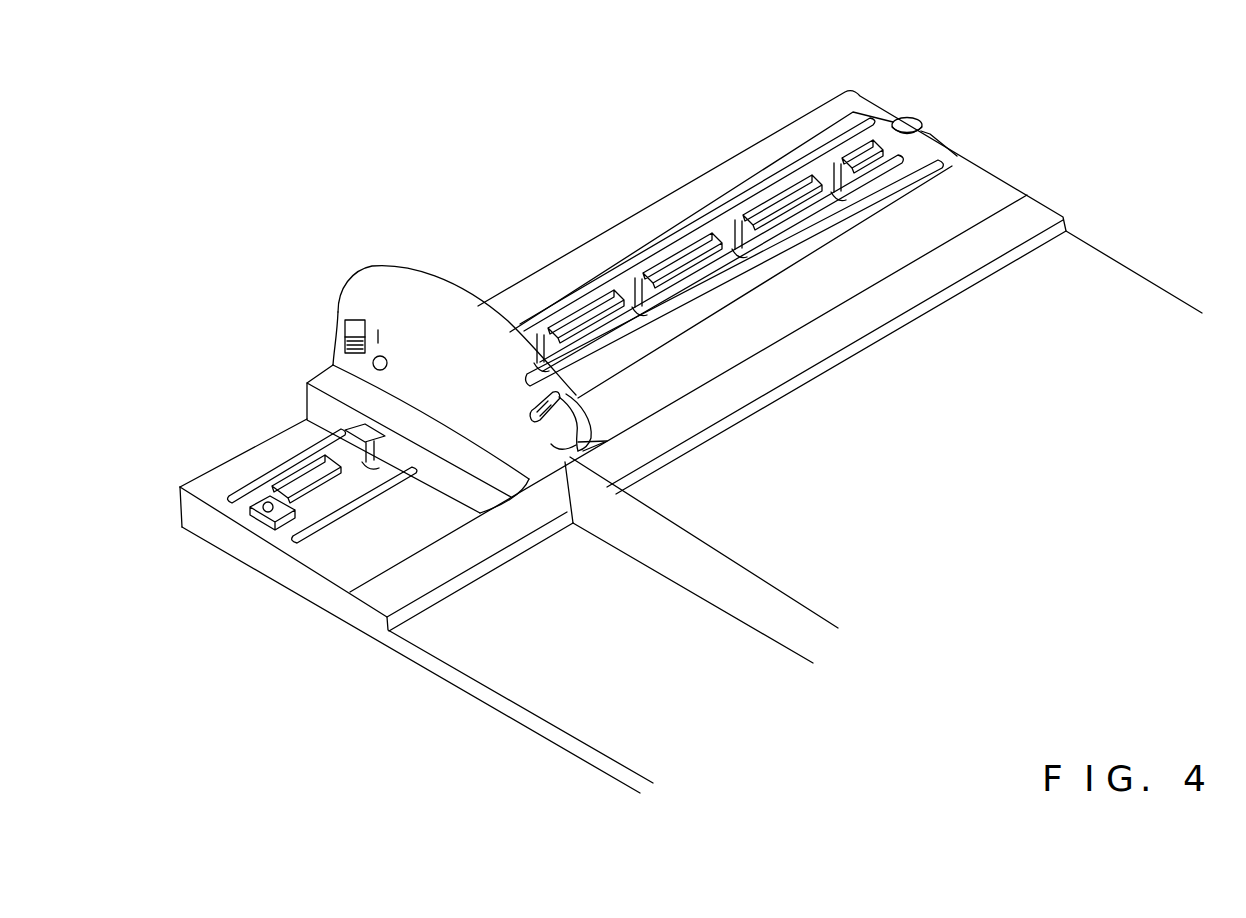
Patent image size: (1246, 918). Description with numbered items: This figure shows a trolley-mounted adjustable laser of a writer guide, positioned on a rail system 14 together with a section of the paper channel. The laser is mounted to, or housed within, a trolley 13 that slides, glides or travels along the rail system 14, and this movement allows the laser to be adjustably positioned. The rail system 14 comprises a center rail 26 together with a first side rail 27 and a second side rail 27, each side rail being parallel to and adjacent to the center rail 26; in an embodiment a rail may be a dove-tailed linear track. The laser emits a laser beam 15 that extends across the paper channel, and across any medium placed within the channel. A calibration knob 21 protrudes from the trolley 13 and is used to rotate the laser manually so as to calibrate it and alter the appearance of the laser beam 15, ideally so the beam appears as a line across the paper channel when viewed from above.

The trolley 13 is at (394, 312).
The rail system 14 is at (887, 117).
The laser beam 15 is at (722, 578).
The calibration knob 21 is at (567, 394).
The center rail 26 is at (270, 536).
The first side rail / second side rail 27 is at (228, 496).